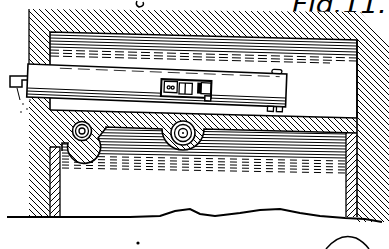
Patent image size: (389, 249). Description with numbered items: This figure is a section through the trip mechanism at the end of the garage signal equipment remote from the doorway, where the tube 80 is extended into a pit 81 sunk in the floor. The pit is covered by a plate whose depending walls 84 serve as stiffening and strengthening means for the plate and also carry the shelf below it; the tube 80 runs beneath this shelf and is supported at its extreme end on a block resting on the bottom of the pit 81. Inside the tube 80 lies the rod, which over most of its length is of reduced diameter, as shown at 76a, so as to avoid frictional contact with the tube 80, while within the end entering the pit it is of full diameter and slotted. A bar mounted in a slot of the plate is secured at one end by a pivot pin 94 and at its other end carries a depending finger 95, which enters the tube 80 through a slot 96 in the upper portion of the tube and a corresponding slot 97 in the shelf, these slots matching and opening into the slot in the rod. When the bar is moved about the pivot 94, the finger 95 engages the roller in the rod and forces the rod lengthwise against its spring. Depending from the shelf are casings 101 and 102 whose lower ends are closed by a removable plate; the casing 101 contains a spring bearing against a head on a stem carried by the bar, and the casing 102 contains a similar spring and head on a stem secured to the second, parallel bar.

The tube 80 is at (157, 86).
The pit 81 is at (339, 79).
The depending walls 84 is at (50, 218).
The reduced diameter portion 76a is at (32, 106).
The pivot pin 94 is at (192, 81).
The depending finger 95 is at (177, 82).
The slot 96 is at (207, 80).
The slot 97 is at (212, 89).
The casing 101 is at (202, 150).
The casing 102 is at (97, 154).